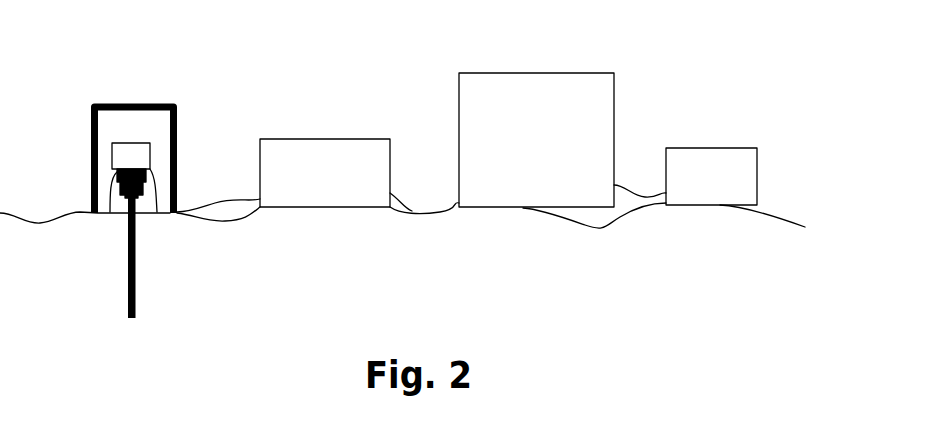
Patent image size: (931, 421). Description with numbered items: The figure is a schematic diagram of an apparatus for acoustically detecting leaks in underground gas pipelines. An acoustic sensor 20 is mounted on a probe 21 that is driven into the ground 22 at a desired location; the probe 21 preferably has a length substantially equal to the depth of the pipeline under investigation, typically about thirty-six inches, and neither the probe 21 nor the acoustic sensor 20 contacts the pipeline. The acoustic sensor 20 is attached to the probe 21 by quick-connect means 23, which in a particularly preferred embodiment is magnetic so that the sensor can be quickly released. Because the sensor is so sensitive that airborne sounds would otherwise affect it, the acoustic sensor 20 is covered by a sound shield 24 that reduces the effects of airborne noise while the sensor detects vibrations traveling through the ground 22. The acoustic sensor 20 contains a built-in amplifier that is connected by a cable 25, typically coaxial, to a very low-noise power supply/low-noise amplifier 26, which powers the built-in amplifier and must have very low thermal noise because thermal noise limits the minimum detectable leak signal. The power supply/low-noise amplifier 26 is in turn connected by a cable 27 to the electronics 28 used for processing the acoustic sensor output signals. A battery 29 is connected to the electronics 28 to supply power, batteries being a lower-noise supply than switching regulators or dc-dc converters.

The acoustic sensor 20 is at (138, 143).
The probe 21 is at (124, 230).
The ground 22 is at (257, 287).
The quick-connect means 23 is at (112, 171).
The sound shield 24 is at (90, 124).
The cable 25 is at (211, 208).
The low-noise power supply/low-noise amplifier 26 is at (305, 139).
The cable 27 is at (425, 200).
The electronics 28 is at (512, 74).
The battery 29 is at (703, 148).